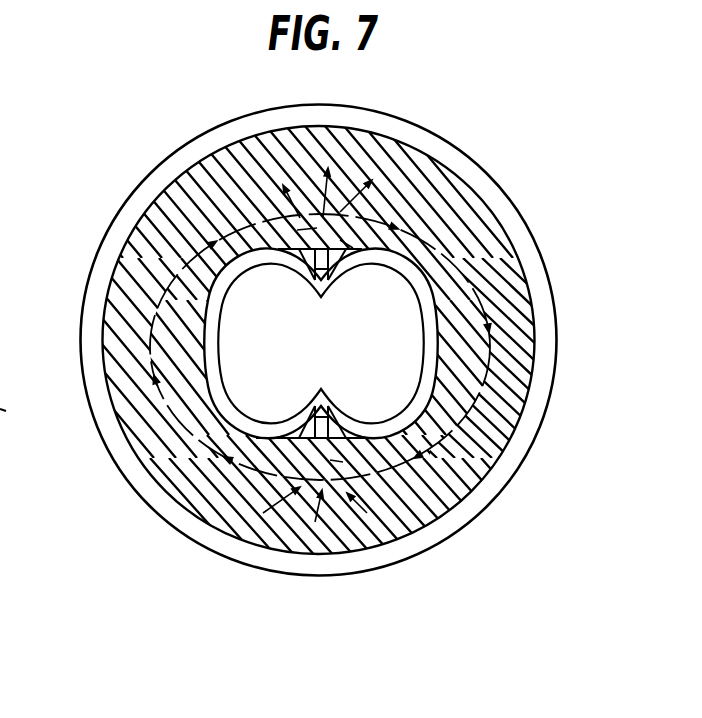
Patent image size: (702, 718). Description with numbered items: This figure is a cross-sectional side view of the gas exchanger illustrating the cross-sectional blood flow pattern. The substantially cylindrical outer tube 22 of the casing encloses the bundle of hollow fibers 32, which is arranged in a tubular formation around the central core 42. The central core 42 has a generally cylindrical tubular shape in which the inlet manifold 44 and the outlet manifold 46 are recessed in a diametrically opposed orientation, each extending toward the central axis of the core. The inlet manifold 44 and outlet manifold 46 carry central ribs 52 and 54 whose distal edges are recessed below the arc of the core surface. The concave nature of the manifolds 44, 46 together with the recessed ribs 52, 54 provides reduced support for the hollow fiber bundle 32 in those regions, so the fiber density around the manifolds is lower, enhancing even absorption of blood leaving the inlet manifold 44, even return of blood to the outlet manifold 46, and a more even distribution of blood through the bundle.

The outer tube 22 is at (132, 460).
The bundle of hollow fibers 32 is at (508, 278).
The central core 42 is at (158, 314).
The inlet manifold 44 is at (300, 251).
The central rib 52 is at (329, 250).
The outlet manifold 46 is at (298, 430).
The central rib 54 is at (342, 416).